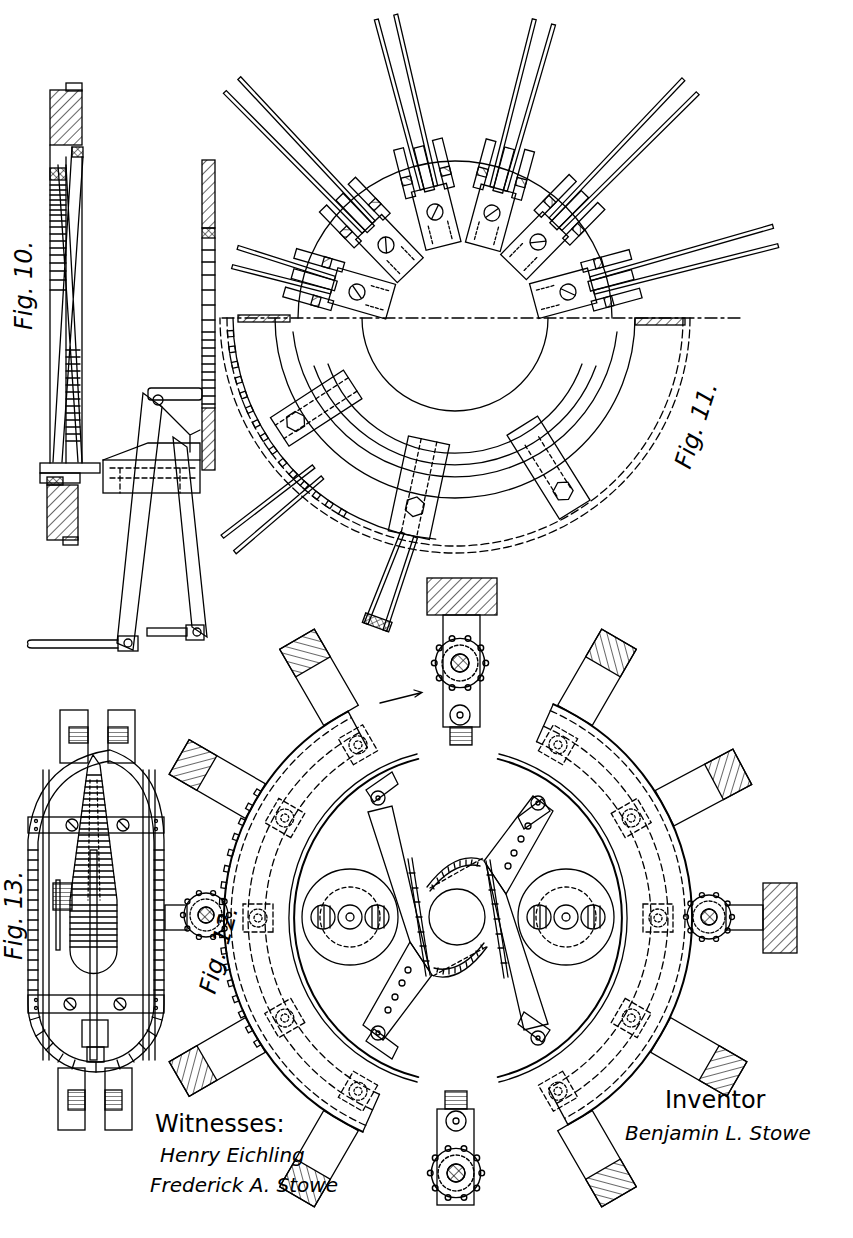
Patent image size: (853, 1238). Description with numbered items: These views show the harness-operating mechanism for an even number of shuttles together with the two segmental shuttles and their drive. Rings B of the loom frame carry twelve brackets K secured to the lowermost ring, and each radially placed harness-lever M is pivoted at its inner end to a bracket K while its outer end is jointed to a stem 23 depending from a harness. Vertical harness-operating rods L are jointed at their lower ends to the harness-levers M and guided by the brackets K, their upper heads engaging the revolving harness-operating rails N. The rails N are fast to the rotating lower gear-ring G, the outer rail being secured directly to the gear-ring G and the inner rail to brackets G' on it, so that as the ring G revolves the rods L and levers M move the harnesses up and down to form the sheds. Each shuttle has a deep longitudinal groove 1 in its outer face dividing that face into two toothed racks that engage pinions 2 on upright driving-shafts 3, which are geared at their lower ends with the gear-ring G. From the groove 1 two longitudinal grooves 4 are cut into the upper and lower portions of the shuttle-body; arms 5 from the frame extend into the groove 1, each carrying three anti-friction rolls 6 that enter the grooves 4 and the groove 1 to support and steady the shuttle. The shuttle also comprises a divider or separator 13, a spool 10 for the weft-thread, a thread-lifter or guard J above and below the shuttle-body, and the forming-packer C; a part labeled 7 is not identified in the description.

In FIG. 10, the harness-operating rails N is at (70, 395).
In FIG. 11, the harness-operating rails N is at (445, 445).
In FIG. 10, the brackets K is at (172, 385).
In FIG. 10, the rings of the frame B is at (198, 315).
In FIG. 11, the rings of the frame B is at (495, 390).
In FIG. 10, the harness-operating rods L is at (80, 478).
In FIG. 11, the harness-operating rods L is at (605, 372).
In FIG. 10, the lower gear-ring G is at (47, 515).
In FIG. 11, the lower gear-ring G is at (455, 434).
In FIG. 11, the brackets on gear-ring G' is at (430, 444).
In FIG. 10, the harness-lever M is at (150, 553).
In FIG. 11, the harness-lever M is at (395, 118).
In FIG. 10, the stem 23 is at (70, 644).
In FIG. 12, the longitudinal groove 1 is at (275, 878).
In FIG. 13, the longitudinal groove 1 is at (70, 738).
In FIG. 12, the pinions 2 is at (483, 665).
In FIG. 12, the driving-shafts 3 is at (455, 660).
In FIG. 13, the longitudinal grooves 4 is at (128, 738).
In FIG. 12, the arms 5 is at (481, 892).
In FIG. 12, the anti-friction rolls 6 is at (450, 715).
In FIG. 12, the jaw lever 7 is at (413, 880).
In FIG. 12, the spool 10 is at (345, 905).
In FIG. 13, the spool 10 is at (55, 895).
In FIG. 13, the divider or separator 13 is at (110, 925).
In FIG. 12, the thread-lifter or guard J is at (458, 918).
In FIG. 13, the thread-lifter or guard J is at (96, 911).
In FIG. 12, the forming-packer C is at (457, 919).
In FIG. 13, the forming-packer C is at (91, 956).